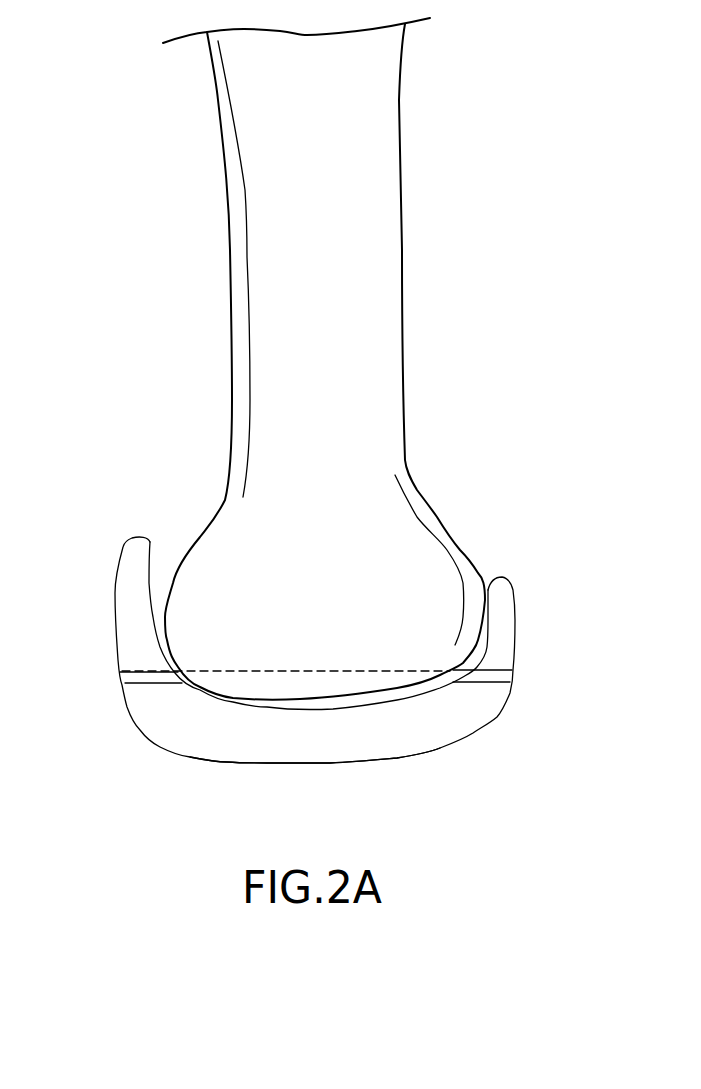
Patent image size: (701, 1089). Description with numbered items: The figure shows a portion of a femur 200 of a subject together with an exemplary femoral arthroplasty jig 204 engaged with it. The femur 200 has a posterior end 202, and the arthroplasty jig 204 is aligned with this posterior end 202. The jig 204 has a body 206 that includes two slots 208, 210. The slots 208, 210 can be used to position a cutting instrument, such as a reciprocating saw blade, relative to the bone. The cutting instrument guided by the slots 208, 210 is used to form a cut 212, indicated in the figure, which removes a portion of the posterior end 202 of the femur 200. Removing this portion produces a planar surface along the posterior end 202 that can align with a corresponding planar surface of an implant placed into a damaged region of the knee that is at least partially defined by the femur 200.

The femur 200 is at (385, 195).
The posterior end 202 is at (316, 647).
The arthroplasty jig 204 is at (338, 742).
The body 206 is at (473, 717).
The slot 208 is at (130, 678).
The slot 210 is at (500, 676).
The cut 212 is at (243, 682).